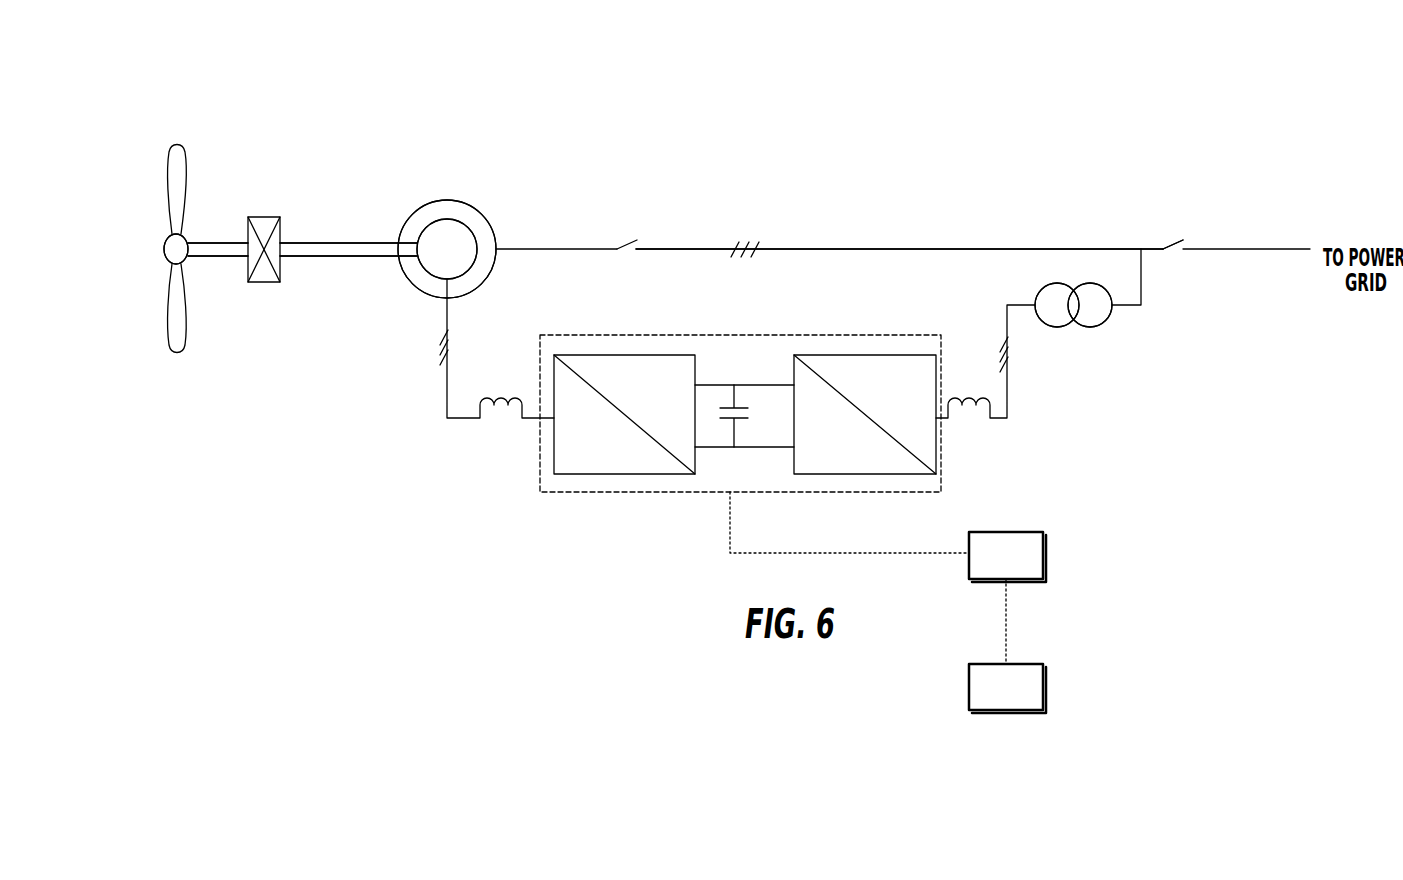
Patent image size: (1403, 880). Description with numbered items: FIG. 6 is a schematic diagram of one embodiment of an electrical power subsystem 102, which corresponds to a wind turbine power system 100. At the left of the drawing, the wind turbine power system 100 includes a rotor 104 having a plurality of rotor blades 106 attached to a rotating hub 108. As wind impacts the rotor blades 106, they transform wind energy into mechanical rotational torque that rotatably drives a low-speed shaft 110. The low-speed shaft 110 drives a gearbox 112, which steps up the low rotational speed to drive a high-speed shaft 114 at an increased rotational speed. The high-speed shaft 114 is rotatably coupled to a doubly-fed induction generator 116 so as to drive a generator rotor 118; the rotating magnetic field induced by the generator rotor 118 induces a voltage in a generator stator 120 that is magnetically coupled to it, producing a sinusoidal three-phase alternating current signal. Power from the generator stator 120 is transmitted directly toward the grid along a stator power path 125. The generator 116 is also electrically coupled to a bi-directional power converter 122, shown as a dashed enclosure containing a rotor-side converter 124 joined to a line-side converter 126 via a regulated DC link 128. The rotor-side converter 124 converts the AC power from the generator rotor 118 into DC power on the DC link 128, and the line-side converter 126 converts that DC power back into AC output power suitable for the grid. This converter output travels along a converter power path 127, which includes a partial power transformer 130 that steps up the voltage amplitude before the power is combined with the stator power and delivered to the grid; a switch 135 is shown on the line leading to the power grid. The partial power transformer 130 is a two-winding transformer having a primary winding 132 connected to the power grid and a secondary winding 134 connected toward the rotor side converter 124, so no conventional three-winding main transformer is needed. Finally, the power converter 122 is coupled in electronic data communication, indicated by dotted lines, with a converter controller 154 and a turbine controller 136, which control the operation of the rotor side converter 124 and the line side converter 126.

The wind turbine power system 100 is at (196, 108).
The electrical power subsystem 102 is at (1068, 132).
The rotor 104 is at (160, 237).
The rotor blades 106 is at (178, 176).
The rotating hub 108 is at (165, 262).
The low-speed shaft 110 is at (205, 254).
The gearbox 112 is at (262, 217).
The high-speed shaft 114 is at (332, 256).
The doubly-fed induction generator 116 is at (474, 200).
The generator rotor 118 is at (425, 268).
The generator stator 120 is at (410, 218).
The bi-directional power converter 122 is at (680, 494).
The rotor-side converter 124 is at (618, 355).
The stator power path 125 is at (802, 249).
The line-side converter 126 is at (856, 355).
The converter power path 127 is at (1007, 390).
The regulated DC link 128 is at (738, 380).
The partial power transformer 130 is at (1092, 330).
The primary winding 132 is at (1110, 290).
The secondary winding 134 is at (1040, 290).
The grid breaker 135 is at (1192, 240).
The turbine controller 136 is at (1024, 705).
The converter controller 154 is at (1024, 574).